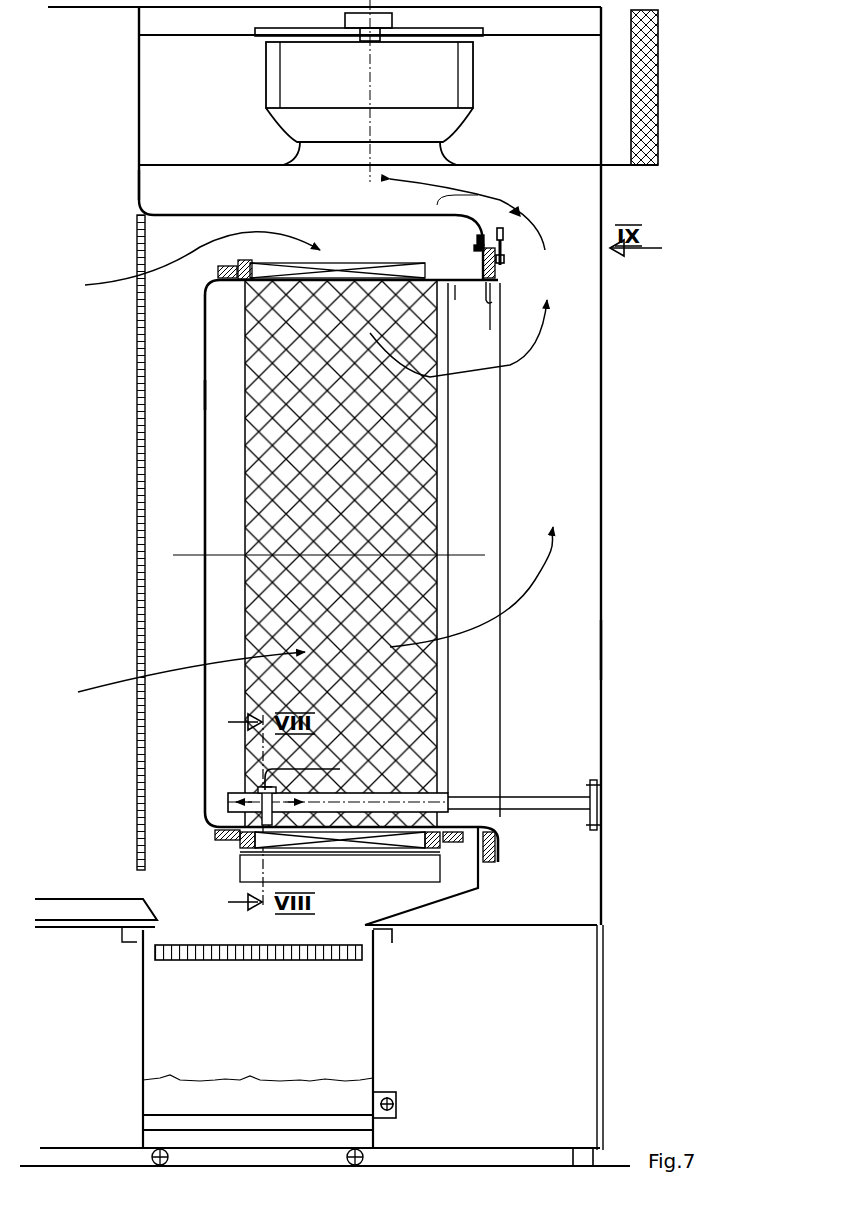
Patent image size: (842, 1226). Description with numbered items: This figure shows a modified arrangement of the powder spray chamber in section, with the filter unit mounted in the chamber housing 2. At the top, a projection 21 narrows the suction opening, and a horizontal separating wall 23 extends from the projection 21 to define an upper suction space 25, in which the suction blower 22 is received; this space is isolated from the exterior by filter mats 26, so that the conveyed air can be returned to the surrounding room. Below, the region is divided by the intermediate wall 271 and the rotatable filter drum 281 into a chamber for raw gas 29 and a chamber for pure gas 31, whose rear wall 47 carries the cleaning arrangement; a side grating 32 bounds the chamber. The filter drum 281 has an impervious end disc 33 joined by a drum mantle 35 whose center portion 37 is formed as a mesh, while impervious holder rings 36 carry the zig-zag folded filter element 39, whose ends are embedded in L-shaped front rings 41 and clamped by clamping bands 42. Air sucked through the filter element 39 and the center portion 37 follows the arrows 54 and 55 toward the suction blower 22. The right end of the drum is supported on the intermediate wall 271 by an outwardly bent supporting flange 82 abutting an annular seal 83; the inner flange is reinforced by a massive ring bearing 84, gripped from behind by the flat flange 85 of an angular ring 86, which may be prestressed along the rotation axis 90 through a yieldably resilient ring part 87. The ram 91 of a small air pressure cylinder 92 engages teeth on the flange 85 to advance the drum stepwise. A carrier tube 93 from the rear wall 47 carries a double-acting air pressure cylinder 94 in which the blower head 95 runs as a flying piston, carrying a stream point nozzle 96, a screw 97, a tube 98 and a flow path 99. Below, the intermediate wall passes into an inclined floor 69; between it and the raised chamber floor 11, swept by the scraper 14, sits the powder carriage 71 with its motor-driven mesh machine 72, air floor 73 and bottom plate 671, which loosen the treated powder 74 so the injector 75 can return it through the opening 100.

The dust collector housing 2 is at (606, 377).
The floor 11 is at (55, 930).
The scraper 14 is at (72, 905).
The projection 21 is at (138, 180).
The suction blower 22 is at (427, 84).
The horizontal separating wall 23 is at (540, 165).
The upper suction space 25 is at (547, 107).
The filter mats 26 is at (658, 94).
The chamber for raw gas 29 is at (360, 246).
The chamber for pure gas 31 is at (585, 371).
The side wall grid 32 is at (137, 437).
The end disc 33 is at (205, 430).
The drum mantle 35 is at (230, 283).
The holder rings 36 is at (212, 388).
The center portion of the drum mantle 37 is at (245, 480).
The filter element 39 is at (363, 262).
The L-shaped front rings 41 is at (243, 260).
The clamping bands 42 is at (222, 262).
The rear wall 47 is at (603, 650).
The arrow 54 is at (458, 350).
The arrow 55 is at (456, 214).
The inclined floor 69 is at (445, 900).
The powder carriage 71 is at (305, 1022).
The motor driven mesh machine 72 is at (180, 960).
The air floor 73 is at (300, 1120).
The treated powder 74 is at (197, 1090).
The injector 75 is at (396, 1108).
The supporting flange 82 is at (476, 250).
The annular seal 83 is at (477, 240).
The ring bearing 84 is at (490, 310).
The flat flange 85 is at (495, 265).
The angular ring 86 is at (455, 293).
The yieldably resilient ring part 87 is at (492, 296).
The rotation axis 90 is at (455, 555).
The ram 91 is at (514, 256).
The air pressure cylinder 92 is at (503, 232).
The carrier tube 93 is at (505, 798).
The double-acting air pressure cylinder 94 is at (440, 793).
The blower head 95 is at (262, 795).
The stream point nozzle 96 is at (215, 835).
The screw 97 is at (262, 785).
The tube 98 is at (270, 768).
The air flow 99 is at (517, 209).
The opening 100 is at (603, 1010).
The intermediate wall 271 is at (455, 205).
The filter drum 281 is at (218, 287).
The bottom plate 671 is at (345, 875).